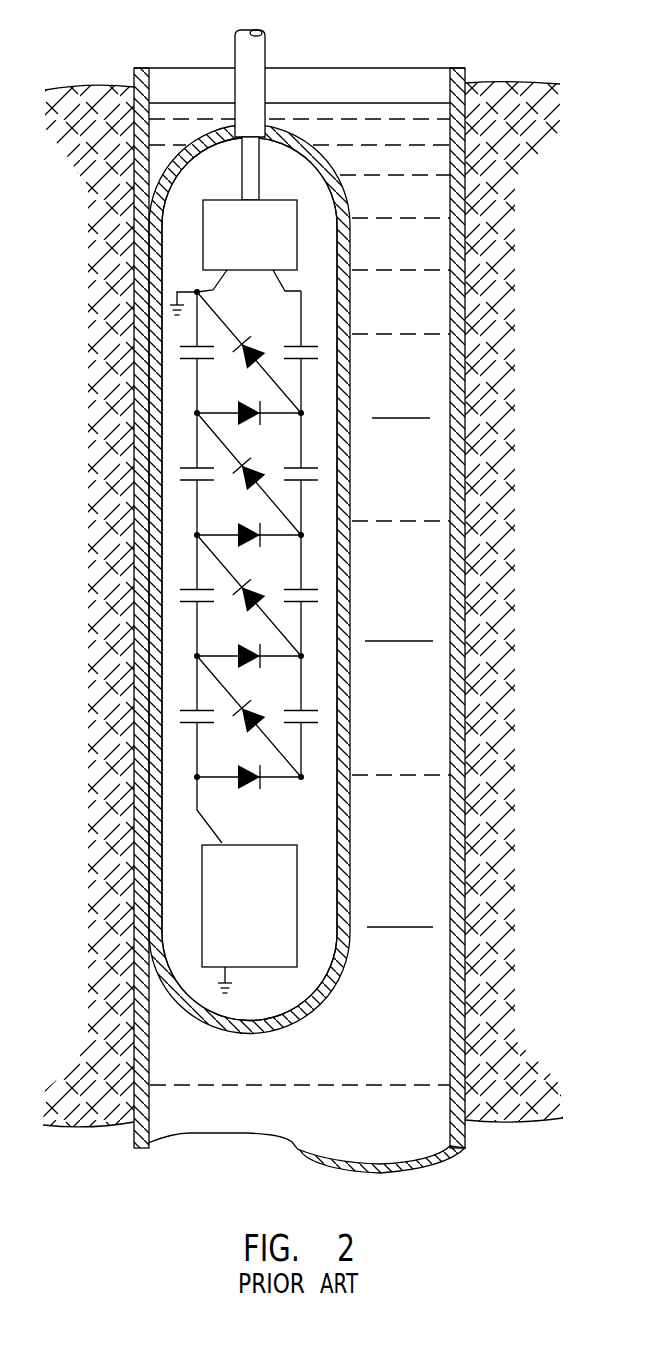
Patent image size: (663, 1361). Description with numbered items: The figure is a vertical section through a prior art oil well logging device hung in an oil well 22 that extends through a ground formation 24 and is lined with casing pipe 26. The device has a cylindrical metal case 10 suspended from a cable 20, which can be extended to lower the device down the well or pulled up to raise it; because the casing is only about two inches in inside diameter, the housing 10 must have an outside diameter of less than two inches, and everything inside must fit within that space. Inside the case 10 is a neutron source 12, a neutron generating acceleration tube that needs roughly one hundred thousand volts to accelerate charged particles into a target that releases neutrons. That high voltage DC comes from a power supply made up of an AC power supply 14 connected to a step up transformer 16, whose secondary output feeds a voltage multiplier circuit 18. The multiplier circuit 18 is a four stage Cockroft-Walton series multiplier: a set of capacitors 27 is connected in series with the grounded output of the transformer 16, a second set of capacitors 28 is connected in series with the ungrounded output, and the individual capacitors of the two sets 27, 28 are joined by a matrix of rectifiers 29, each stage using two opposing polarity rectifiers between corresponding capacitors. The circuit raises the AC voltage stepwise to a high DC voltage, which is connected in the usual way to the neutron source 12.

The metal case 10 is at (348, 315).
The neutron source 12 is at (285, 877).
The AC power supply 14 is at (243, 167).
The step up transformer 16 is at (217, 245).
The voltage multiplier circuit 18 is at (150, 343).
The cable 20 is at (258, 48).
The oil well 22 is at (410, 389).
The ground formation 24 is at (495, 507).
The casing pipe 26 is at (458, 443).
The set of capacitors 27 is at (182, 742).
The set of capacitors 28 is at (316, 742).
The rectifiers 29 is at (279, 325).